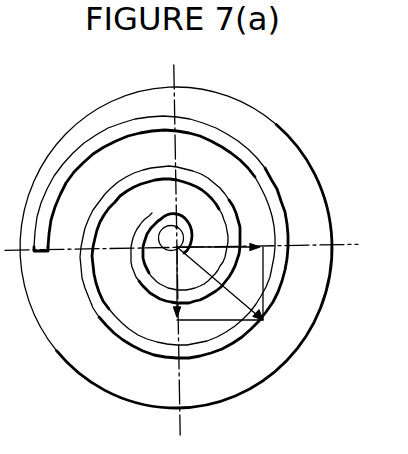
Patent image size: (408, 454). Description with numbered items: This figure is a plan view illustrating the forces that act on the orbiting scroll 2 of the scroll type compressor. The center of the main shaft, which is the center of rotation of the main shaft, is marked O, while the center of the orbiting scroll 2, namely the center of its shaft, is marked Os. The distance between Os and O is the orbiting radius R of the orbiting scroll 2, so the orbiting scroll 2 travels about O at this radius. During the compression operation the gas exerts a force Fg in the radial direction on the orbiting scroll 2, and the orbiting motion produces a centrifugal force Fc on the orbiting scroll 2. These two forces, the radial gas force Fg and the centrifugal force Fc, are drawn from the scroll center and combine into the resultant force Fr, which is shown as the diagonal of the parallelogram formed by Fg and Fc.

The orbiting scroll 2 is at (291, 121).
The orbiting radius R is at (158, 236).
The center of the main shaft O is at (176, 226).
The center of the orbiting scroll Os is at (176, 249).
The radial gas force Fg is at (216, 249).
The centrifugal force Fc is at (172, 295).
The resultant force Fr is at (236, 302).